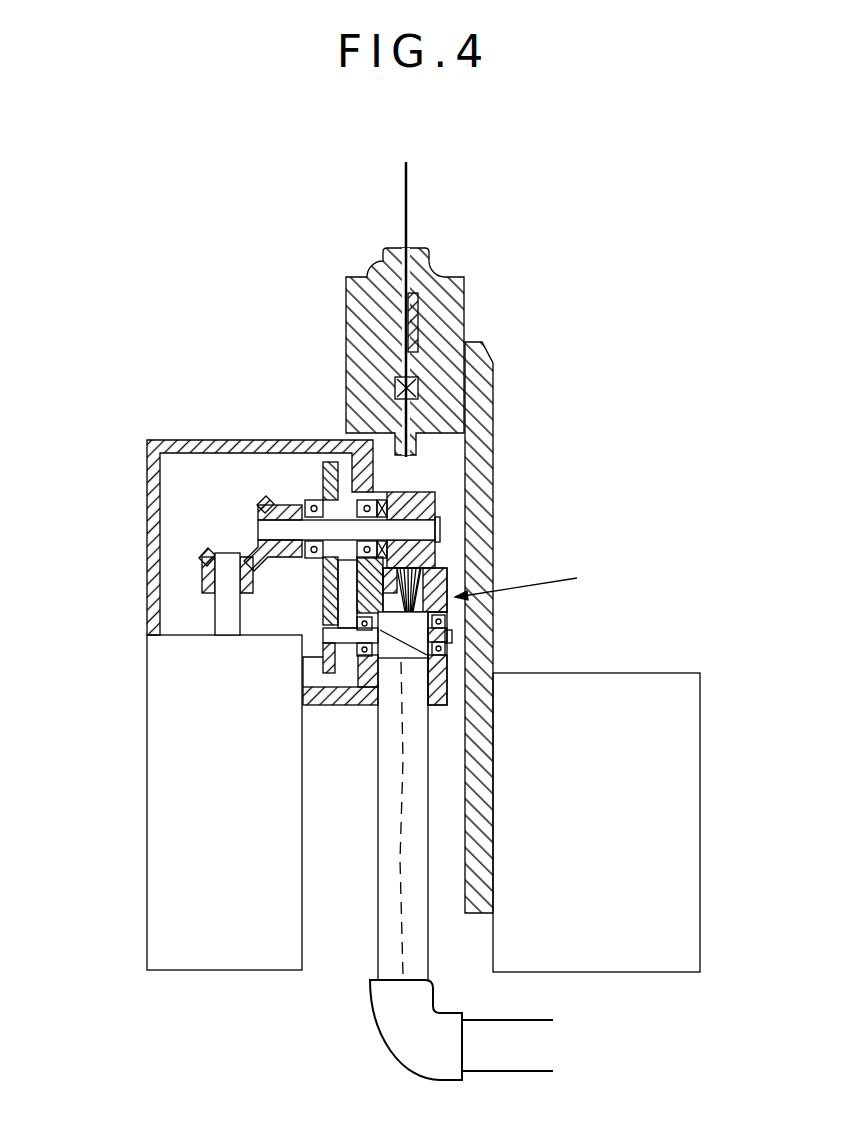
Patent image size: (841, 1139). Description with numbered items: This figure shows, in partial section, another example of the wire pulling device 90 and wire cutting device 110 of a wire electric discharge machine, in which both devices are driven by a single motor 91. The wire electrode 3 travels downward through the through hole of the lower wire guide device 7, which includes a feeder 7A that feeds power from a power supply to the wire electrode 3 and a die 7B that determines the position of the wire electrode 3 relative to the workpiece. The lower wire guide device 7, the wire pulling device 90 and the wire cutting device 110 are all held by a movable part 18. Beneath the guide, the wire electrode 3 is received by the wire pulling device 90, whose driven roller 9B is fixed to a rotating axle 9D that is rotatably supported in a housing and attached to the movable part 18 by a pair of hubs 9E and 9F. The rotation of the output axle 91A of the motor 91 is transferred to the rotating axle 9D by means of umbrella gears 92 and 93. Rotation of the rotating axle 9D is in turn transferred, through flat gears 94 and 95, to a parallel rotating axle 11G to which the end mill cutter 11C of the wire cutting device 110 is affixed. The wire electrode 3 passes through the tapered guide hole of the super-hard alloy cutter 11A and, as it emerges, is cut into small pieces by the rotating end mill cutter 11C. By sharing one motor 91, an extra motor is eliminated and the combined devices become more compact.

The wire electrode 3 is at (408, 192).
The lower wire guide device 7 is at (455, 285).
The feeder 7A is at (420, 318).
The die 7B is at (397, 387).
The roller 9B is at (437, 493).
The rotating axle 9D is at (425, 528).
The hub 9E is at (360, 500).
The hub 9F is at (307, 500).
The flat gear 94 is at (318, 441).
The umbrella gear 93 is at (255, 508).
The wire pulling device 90 is at (208, 528).
The umbrella gear 92 is at (203, 580).
The output axle 91A is at (225, 610).
The flat gear 95 is at (325, 660).
The motor 91 is at (218, 955).
The cutter 11A is at (452, 585).
The wire cutting device 110 is at (537, 581).
The end mill cutter 11C is at (413, 623).
The movable part 18 is at (483, 650).
The rotating axle 11G is at (355, 640).